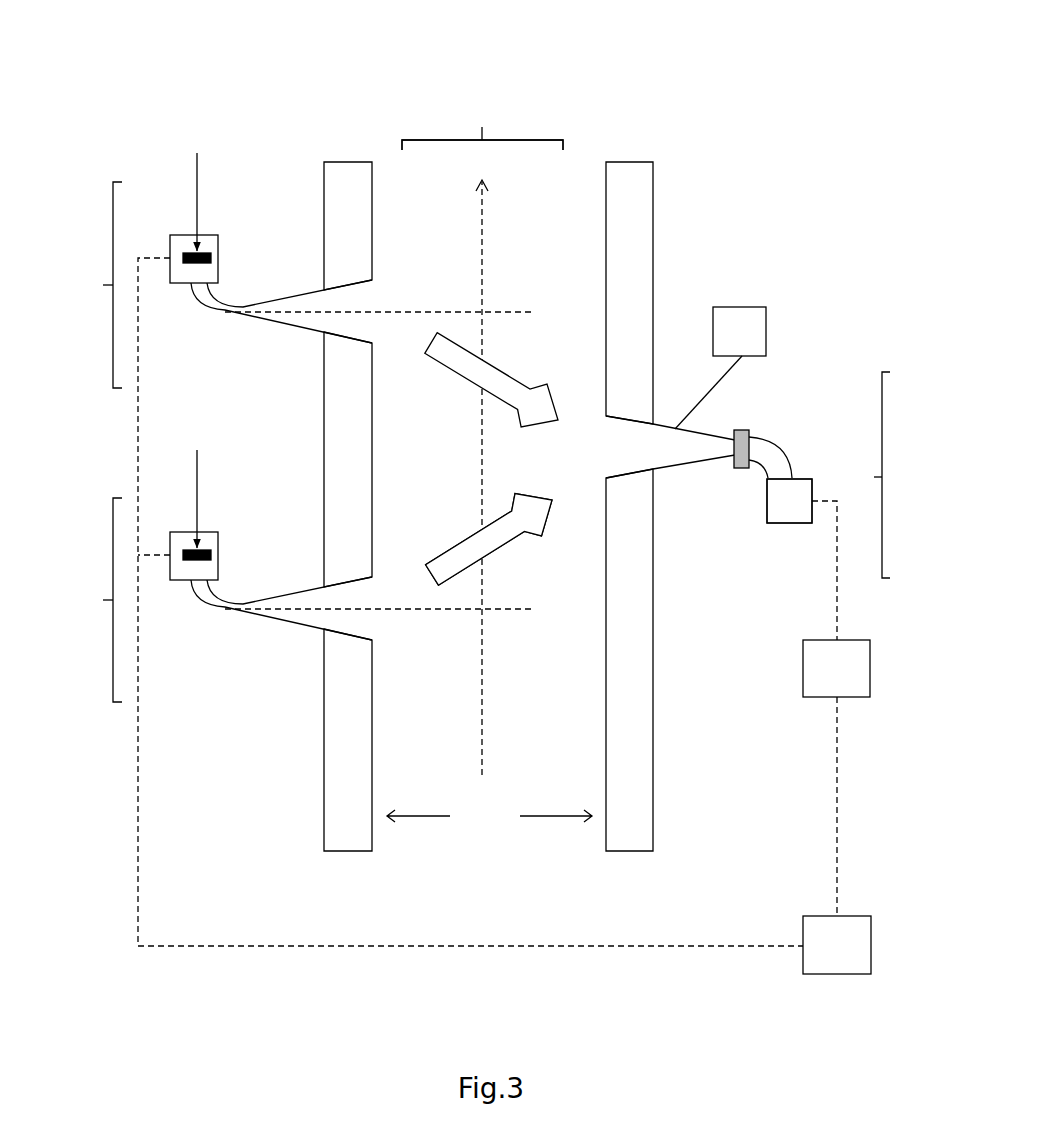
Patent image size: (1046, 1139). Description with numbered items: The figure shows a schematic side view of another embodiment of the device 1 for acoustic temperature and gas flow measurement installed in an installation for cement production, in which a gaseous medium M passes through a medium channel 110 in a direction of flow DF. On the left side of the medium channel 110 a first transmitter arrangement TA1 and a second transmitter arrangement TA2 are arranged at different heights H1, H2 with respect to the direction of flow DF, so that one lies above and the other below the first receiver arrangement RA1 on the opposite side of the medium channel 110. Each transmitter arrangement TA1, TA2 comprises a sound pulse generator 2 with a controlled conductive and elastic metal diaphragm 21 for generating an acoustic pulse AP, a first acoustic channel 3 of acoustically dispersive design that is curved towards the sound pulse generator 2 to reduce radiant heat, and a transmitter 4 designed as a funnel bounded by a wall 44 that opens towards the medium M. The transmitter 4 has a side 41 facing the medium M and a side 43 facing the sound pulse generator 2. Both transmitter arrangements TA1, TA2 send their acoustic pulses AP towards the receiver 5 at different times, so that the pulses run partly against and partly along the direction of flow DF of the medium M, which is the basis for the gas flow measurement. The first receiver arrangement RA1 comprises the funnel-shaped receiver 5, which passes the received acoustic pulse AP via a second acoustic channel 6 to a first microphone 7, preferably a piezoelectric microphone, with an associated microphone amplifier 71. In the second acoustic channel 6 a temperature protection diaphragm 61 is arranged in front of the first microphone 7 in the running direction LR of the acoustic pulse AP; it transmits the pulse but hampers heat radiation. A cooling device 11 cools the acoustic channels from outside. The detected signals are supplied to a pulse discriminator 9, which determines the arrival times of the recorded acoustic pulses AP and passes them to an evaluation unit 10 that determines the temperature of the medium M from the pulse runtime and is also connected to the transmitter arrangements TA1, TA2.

The device 1 is at (279, 84).
The sound pulse generator 2 is at (177, 229).
The metal diaphragm 21 is at (197, 339).
The first acoustic channel 3 is at (206, 296).
The transmitter 4 is at (302, 499).
The side of the transmitter facing the medium 41 is at (362, 300).
The side of the transmitter facing the sound pulse generator 43 is at (246, 315).
The wall of the transmitter 44 is at (306, 335).
The receiver 5 is at (620, 463).
The second acoustic channel 6 is at (790, 457).
The temperature protection diaphragm 61 is at (742, 426).
The first microphone 7 is at (790, 528).
The microphone amplifier 71 is at (769, 559).
The pulse discriminator 9 is at (836, 668).
The evaluation unit 10 is at (837, 945).
The cooling device 11 is at (742, 305).
The medium channel 110 is at (489, 817).
The first height H1 is at (399, 312).
The second height H2 is at (399, 609).
The first transmitter arrangement TA1 is at (89, 285).
The second transmitter arrangement TA2 is at (89, 600).
The first receiver arrangement RA1 is at (907, 475).
The gaseous medium M is at (482, 432).
The direction of flow DF is at (482, 120).
The acoustic pulse AP is at (463, 388).
The running direction LR is at (489, 524).